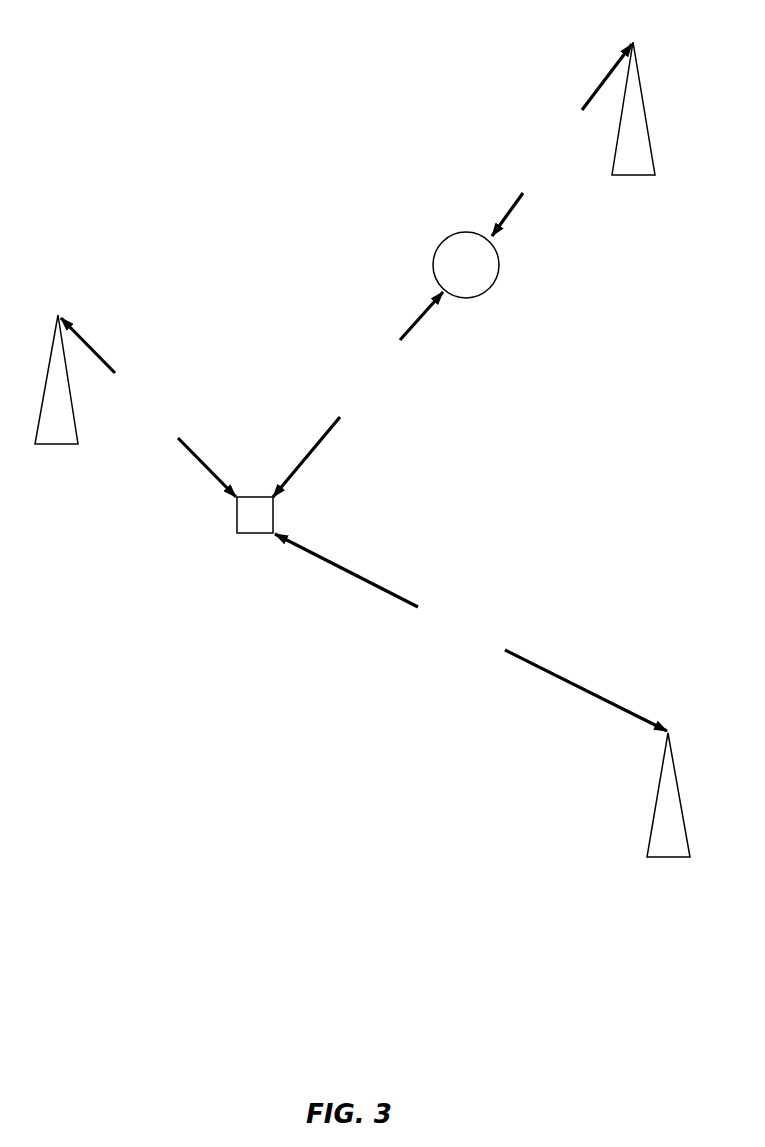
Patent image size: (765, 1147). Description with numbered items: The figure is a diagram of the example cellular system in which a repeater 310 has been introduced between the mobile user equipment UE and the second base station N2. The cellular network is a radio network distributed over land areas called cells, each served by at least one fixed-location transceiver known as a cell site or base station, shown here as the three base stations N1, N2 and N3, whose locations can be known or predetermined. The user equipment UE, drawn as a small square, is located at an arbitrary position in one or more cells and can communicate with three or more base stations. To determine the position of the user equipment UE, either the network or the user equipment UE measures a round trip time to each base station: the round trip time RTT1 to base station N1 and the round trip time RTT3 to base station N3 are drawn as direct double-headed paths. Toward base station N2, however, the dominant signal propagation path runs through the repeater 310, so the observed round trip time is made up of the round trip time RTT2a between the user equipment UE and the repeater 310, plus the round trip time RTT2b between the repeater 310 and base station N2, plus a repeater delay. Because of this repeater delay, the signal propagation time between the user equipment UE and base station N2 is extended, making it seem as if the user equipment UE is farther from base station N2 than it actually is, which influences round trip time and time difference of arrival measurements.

The repeater 310 is at (490, 290).
The base station N1 is at (56, 401).
The second base station N2 is at (633, 128).
The base station N3 is at (668, 816).
The user equipment UE is at (255, 535).
The round trip time to first base station RTT1 is at (148, 407).
The round trip time between UE and repeater RTT2a is at (358, 394).
The round trip time between repeater and second base station RTT2b is at (562, 140).
The round trip time to third base station RTT3 is at (471, 632).